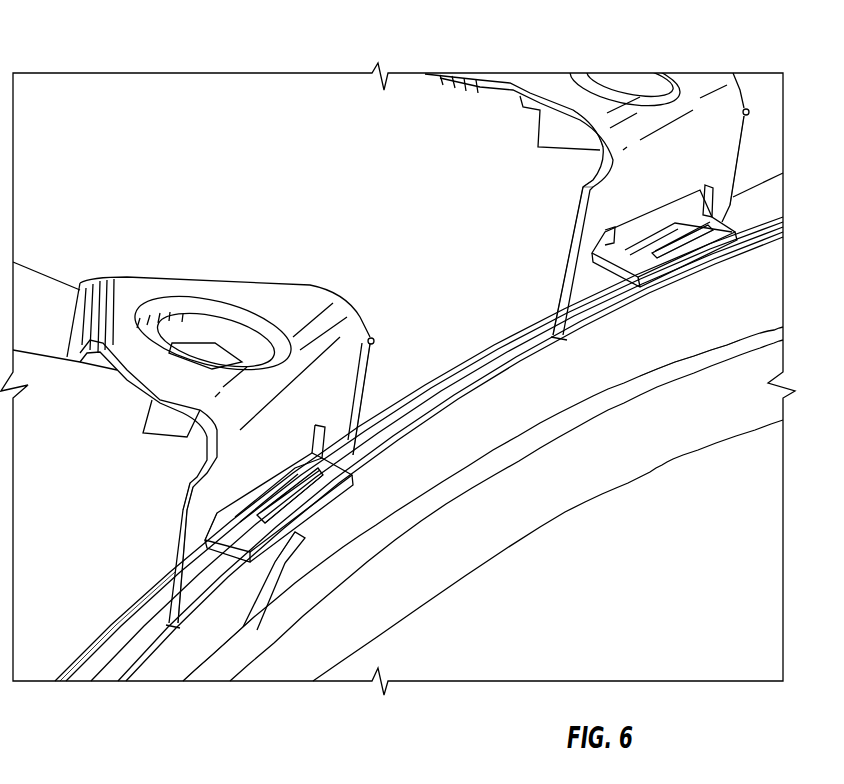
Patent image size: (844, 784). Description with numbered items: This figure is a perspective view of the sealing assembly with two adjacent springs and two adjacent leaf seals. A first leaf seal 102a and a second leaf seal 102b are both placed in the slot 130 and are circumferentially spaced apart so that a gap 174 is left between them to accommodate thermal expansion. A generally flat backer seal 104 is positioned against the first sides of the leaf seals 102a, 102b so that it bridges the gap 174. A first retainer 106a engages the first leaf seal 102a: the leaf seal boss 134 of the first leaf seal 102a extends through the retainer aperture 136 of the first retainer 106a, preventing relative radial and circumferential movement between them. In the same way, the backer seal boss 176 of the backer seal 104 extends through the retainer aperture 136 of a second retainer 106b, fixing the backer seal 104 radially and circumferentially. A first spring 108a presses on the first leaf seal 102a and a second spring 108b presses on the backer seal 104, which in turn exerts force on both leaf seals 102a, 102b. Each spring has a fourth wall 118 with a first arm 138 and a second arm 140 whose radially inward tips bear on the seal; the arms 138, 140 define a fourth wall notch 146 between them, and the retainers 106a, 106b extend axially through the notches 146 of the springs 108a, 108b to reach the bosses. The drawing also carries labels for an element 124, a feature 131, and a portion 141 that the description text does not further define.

The first leaf seal 102a is at (727, 303).
The second leaf seal 102b is at (152, 675).
The backer seal 104 is at (400, 437).
The first retainer 106a is at (652, 275).
The second retainer 106b is at (348, 482).
The first spring 108a is at (578, 100).
The second spring 108b is at (117, 287).
The fourth wall 118 is at (237, 463).
The tab 124 is at (215, 417).
The slot 130 is at (650, 437).
The slot 131 is at (204, 572).
The leaf seal boss 134 is at (316, 515).
The retainer aperture 136 is at (270, 489).
The first arm 138 is at (197, 542).
The second arm 140 is at (352, 427).
The curved portion 141 is at (600, 166).
The fourth wall notch 146 is at (185, 600).
The gap 174 is at (265, 590).
The backer seal boss 176 is at (302, 505).